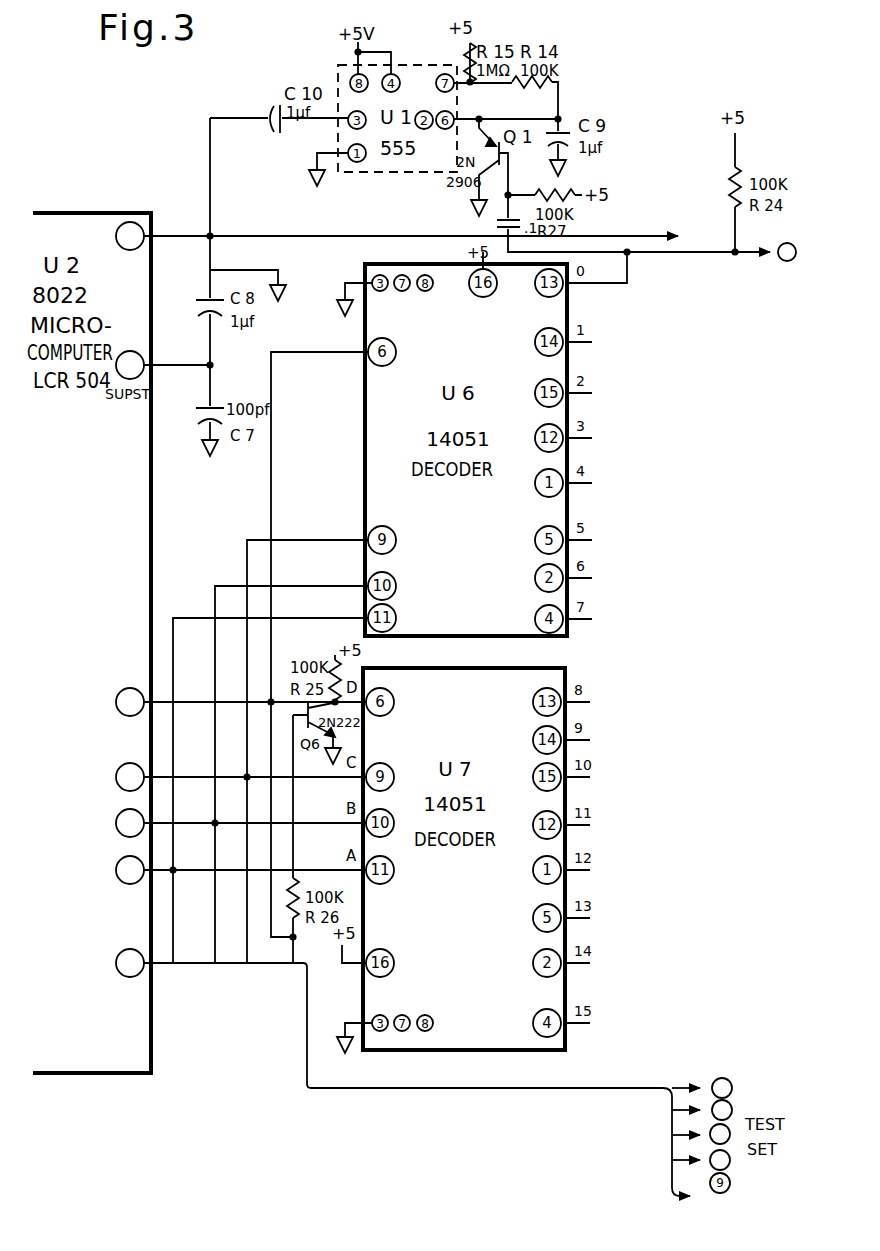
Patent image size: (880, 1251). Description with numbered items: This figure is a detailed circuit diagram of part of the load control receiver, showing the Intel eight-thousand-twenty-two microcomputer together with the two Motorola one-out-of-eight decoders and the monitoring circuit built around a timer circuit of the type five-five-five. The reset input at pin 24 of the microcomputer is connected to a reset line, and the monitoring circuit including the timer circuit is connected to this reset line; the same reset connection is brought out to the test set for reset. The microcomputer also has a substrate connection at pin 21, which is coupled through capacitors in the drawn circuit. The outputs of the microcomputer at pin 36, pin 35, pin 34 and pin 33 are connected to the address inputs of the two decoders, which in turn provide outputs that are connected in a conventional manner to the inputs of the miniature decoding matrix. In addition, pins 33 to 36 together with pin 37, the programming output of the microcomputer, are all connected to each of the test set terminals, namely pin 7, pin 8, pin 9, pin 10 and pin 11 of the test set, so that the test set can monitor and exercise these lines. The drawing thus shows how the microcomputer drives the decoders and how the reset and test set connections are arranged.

The pin 24 of the microcomputer 24 is at (409, 236).
The SUPST substrate pin of microcomputer U2 21 is at (163, 365).
The pin 36 of the microcomputer 36 is at (219, 698).
The pin 35 of the microcomputer 35 is at (219, 773).
The pin 34 of the microcomputer 34 is at (219, 819).
The pin 33 of the microcomputer 33 is at (219, 866).
The pin 37 of the microcomputer 37 is at (372, 1072).
The pin 9 of the test set 9 is at (765, 242).
The pin 10 of the test set 10 is at (702, 1088).
The pin 11 of the test set 11 is at (702, 1110).
The pin 7 of the test set 7 is at (701, 1134).
The pin 8 of the test set 8 is at (701, 1160).